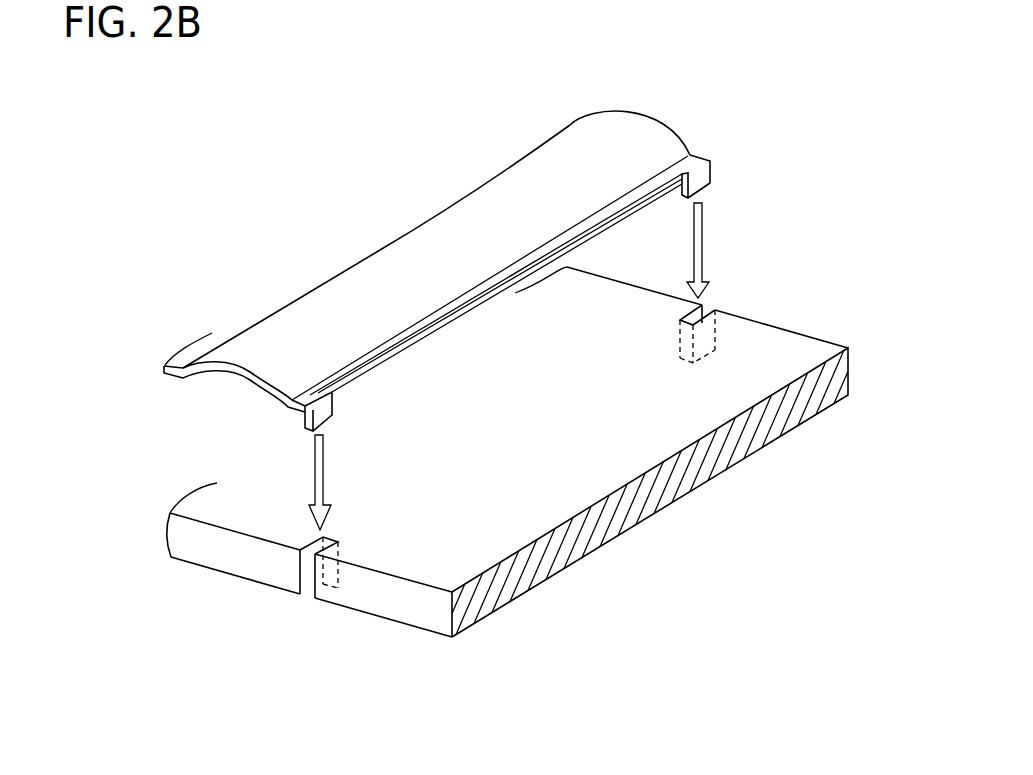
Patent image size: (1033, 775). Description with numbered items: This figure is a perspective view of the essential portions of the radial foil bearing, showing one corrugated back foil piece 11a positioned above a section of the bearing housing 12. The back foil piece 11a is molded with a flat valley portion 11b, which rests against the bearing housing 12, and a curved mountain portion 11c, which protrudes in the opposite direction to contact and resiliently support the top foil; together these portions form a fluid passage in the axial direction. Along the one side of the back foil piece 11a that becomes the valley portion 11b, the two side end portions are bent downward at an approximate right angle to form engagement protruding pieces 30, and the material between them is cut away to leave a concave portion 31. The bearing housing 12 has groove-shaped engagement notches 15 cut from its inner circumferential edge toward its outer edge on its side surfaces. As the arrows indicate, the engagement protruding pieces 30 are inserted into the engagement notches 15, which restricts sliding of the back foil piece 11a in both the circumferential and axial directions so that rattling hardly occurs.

The back foil piece 11a is at (654, 115).
The flat valley portion 11b is at (568, 127).
The curved mountain portion 11c is at (318, 320).
The bearing housing 12 is at (227, 557).
The engagement notch 15 is at (702, 338).
The engagement protruding piece 30 is at (323, 412).
The concave portion 31 is at (392, 358).